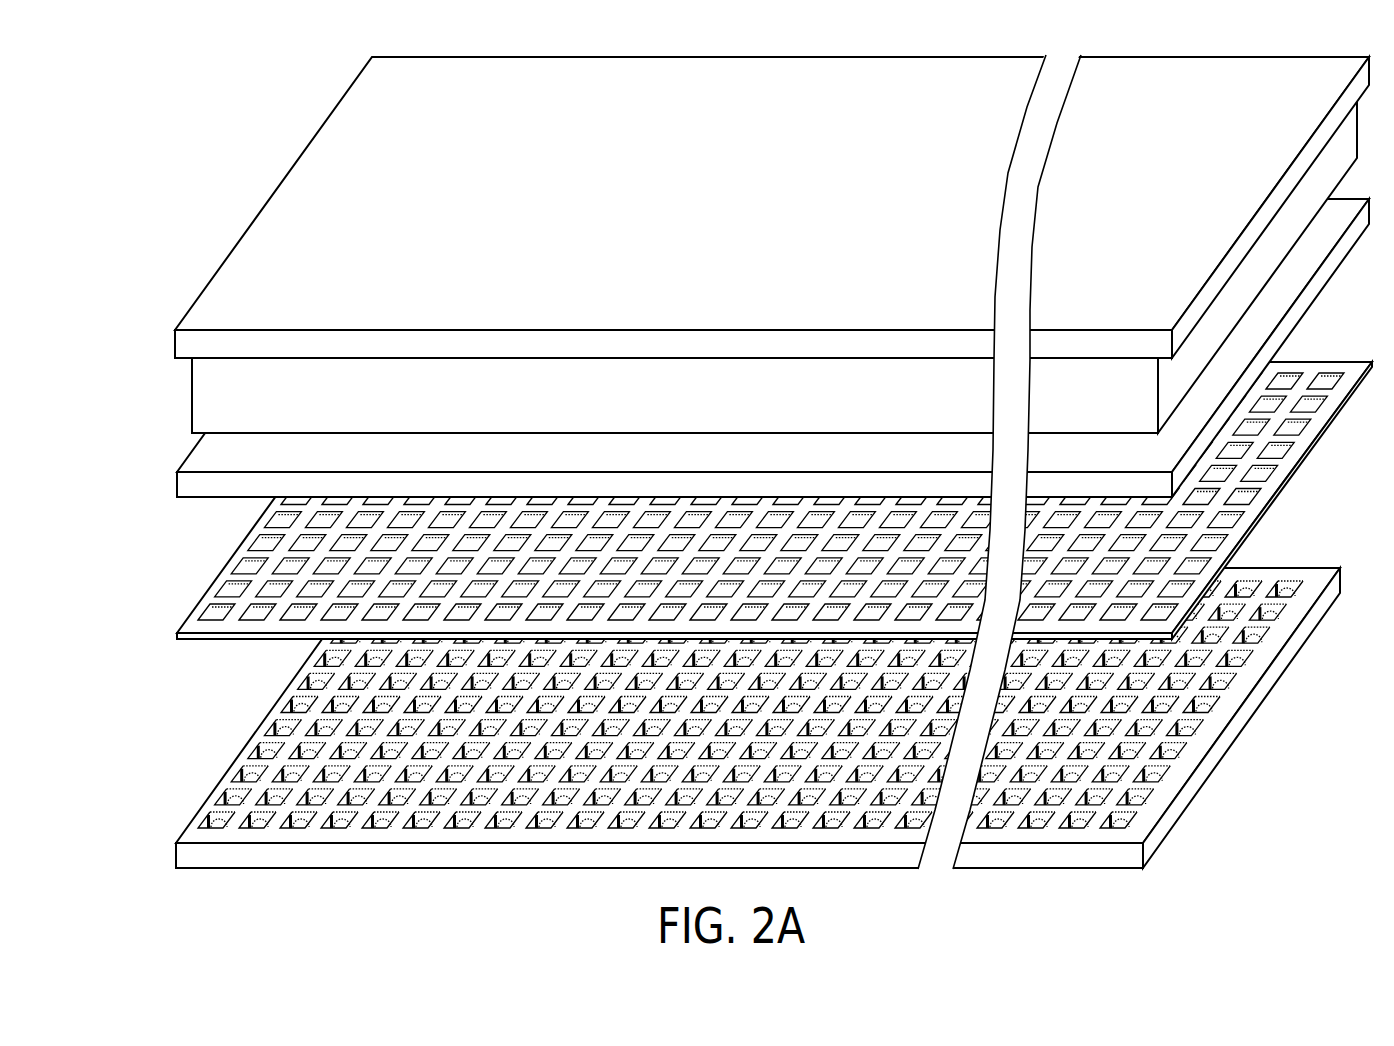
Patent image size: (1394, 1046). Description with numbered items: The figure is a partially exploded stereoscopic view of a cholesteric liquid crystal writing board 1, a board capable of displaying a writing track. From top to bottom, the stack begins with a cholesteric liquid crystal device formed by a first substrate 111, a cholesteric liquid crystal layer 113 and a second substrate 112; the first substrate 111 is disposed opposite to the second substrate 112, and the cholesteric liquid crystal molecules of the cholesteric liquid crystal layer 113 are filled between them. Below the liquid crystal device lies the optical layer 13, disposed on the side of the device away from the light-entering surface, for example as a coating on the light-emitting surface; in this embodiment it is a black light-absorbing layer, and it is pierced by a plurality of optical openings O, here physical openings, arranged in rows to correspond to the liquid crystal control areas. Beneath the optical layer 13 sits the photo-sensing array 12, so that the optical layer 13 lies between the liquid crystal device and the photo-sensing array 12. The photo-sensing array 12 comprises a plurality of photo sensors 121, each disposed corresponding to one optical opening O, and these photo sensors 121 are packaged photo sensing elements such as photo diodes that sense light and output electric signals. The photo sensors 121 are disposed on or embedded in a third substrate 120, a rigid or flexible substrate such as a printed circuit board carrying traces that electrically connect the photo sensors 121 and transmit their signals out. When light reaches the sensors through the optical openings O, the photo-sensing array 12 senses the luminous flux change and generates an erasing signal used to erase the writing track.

The cholesteric liquid crystal writing board 1 is at (734, 464).
The first substrate 111 is at (185, 345).
The cholesteric liquid crystal layer 113 is at (200, 381).
The second substrate 112 is at (192, 481).
The optical layer 13 is at (745, 500).
The optical opening O is at (253, 540).
The photo-sensing array 12 is at (720, 723).
The photo sensor 121 is at (297, 703).
The third substrate 120 is at (190, 855).